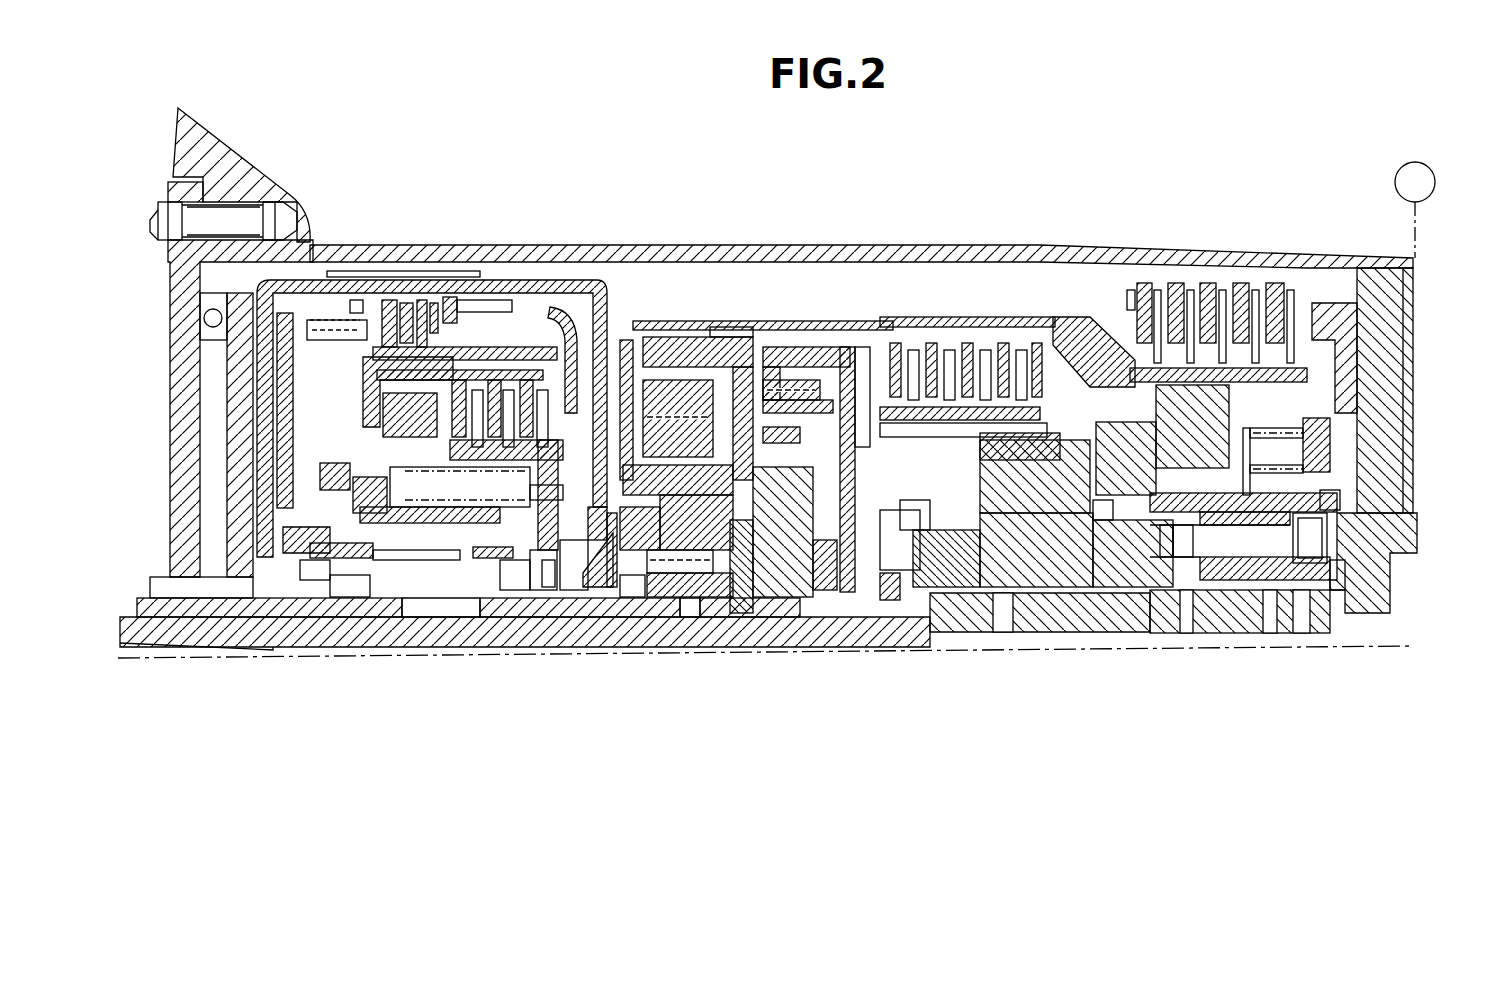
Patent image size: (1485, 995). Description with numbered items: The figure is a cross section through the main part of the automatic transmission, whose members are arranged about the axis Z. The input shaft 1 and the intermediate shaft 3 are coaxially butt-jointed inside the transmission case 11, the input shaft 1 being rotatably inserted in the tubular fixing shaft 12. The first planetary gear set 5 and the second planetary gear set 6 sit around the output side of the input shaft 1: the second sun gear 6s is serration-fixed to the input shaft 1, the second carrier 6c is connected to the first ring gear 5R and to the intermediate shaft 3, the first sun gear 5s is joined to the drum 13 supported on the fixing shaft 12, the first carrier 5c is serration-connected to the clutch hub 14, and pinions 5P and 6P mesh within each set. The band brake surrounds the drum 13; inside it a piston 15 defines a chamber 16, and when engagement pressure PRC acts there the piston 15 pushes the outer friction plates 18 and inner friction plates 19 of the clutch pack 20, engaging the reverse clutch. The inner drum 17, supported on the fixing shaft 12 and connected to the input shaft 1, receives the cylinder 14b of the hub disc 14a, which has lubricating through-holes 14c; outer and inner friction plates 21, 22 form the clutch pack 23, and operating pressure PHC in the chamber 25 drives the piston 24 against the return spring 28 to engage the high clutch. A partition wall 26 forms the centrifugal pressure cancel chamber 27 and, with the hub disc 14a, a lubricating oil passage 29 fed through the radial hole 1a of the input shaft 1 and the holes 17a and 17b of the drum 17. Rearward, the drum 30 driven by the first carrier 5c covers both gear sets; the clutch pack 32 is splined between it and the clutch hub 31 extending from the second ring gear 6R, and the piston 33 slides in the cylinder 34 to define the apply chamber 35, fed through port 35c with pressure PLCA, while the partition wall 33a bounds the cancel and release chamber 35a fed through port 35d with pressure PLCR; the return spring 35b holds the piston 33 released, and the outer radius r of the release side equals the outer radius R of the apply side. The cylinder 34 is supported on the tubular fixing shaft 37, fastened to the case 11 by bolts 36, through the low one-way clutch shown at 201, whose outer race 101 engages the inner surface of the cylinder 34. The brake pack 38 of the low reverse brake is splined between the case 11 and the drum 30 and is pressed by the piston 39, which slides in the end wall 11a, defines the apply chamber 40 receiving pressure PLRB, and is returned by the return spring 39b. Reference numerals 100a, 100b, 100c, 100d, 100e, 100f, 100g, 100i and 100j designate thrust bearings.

The input shaft 1 is at (348, 660).
The radial direction hole 1a is at (443, 633).
The intermediate shaft 3 is at (1222, 633).
The first planetary gear set 5 is at (693, 597).
The first pinion gear 5P is at (662, 430).
The first ring gear 5R is at (695, 385).
The first sun gear 5s is at (652, 583).
The first carrier 5c is at (723, 573).
The second planetary gear set 6 is at (843, 583).
The second pinion gear 6P is at (777, 390).
The second ring gear 6R is at (808, 353).
The second sun gear 6s is at (786, 593).
The second carrier 6c is at (865, 595).
The transmission case 11 is at (850, 245).
The end wall 11a is at (1387, 300).
The tubular fixing shaft 12 is at (212, 605).
The drum 13 is at (305, 282).
The clutch hub 14 is at (582, 605).
The hub disc 14a is at (595, 380).
The cylinder 14b is at (605, 400).
The lubricating through-holes 14c is at (396, 470).
The piston 15 is at (275, 436).
The chamber 16 is at (297, 533).
The inner drum 17 is at (553, 342).
The hole 17a is at (433, 530).
The hole 17b is at (615, 530).
The outer friction plates 18 is at (388, 300).
The inner friction plates 19 is at (420, 300).
The clutch pack 20 is at (375, 181).
The outer friction plates 21 is at (508, 392).
The inner friction plates 22 is at (460, 380).
The clutch pack 23 is at (457, 310).
The piston 24 is at (372, 405).
The chamber 25 is at (412, 535).
The partition wall 26 is at (380, 436).
The centrifugal pressure cancel chamber 27 is at (400, 484).
The return spring 28 is at (397, 480).
The lubricating oil passage 29 is at (500, 470).
The drum 30 is at (902, 320).
The clutch hub 31 is at (812, 516).
The clutch pack 32 is at (945, 343).
The piston 33 is at (1072, 367).
The partition wall 33a is at (878, 585).
The cylinder 34 is at (1202, 380).
The apply chamber 35 is at (1025, 560).
The cancel and release chamber 35a is at (885, 415).
The return spring 35b is at (1015, 488).
The port 35c is at (990, 540).
The port 35d is at (930, 600).
The bolts 36 is at (1252, 540).
The tubular fixing shaft 37 is at (1143, 553).
The brake pack 38 is at (1172, 318).
The piston 39 is at (1343, 347).
The brake piston return spring 39b is at (1310, 440).
The apply chamber 40 is at (1337, 497).
The thrust bearing 100a is at (512, 635).
The thrust bearing 100b is at (545, 635).
The thrust bearing 100c is at (615, 640).
The thrust bearing 100d is at (628, 640).
The thrust bearing 100e is at (742, 615).
The thrust bearing 100f is at (798, 597).
The thrust bearing 100g is at (885, 640).
The thrust bearing 100i is at (1100, 525).
The thrust bearing 100j is at (1345, 617).
The outer race 101 is at (1200, 600).
The lubricating oil passage 201 is at (1218, 480).
The outer radial R is at (1192, 426).
The outer radial r is at (1103, 518).
The axis Z is at (1415, 210).
The engagement pressure PRC is at (305, 537).
The engagement pressure PHC is at (470, 530).
The low clutch release pressure PLCR is at (938, 540).
The low clutch apply pressure PLCA is at (1007, 497).
The low and reverse brake pressure PLRB is at (1372, 513).